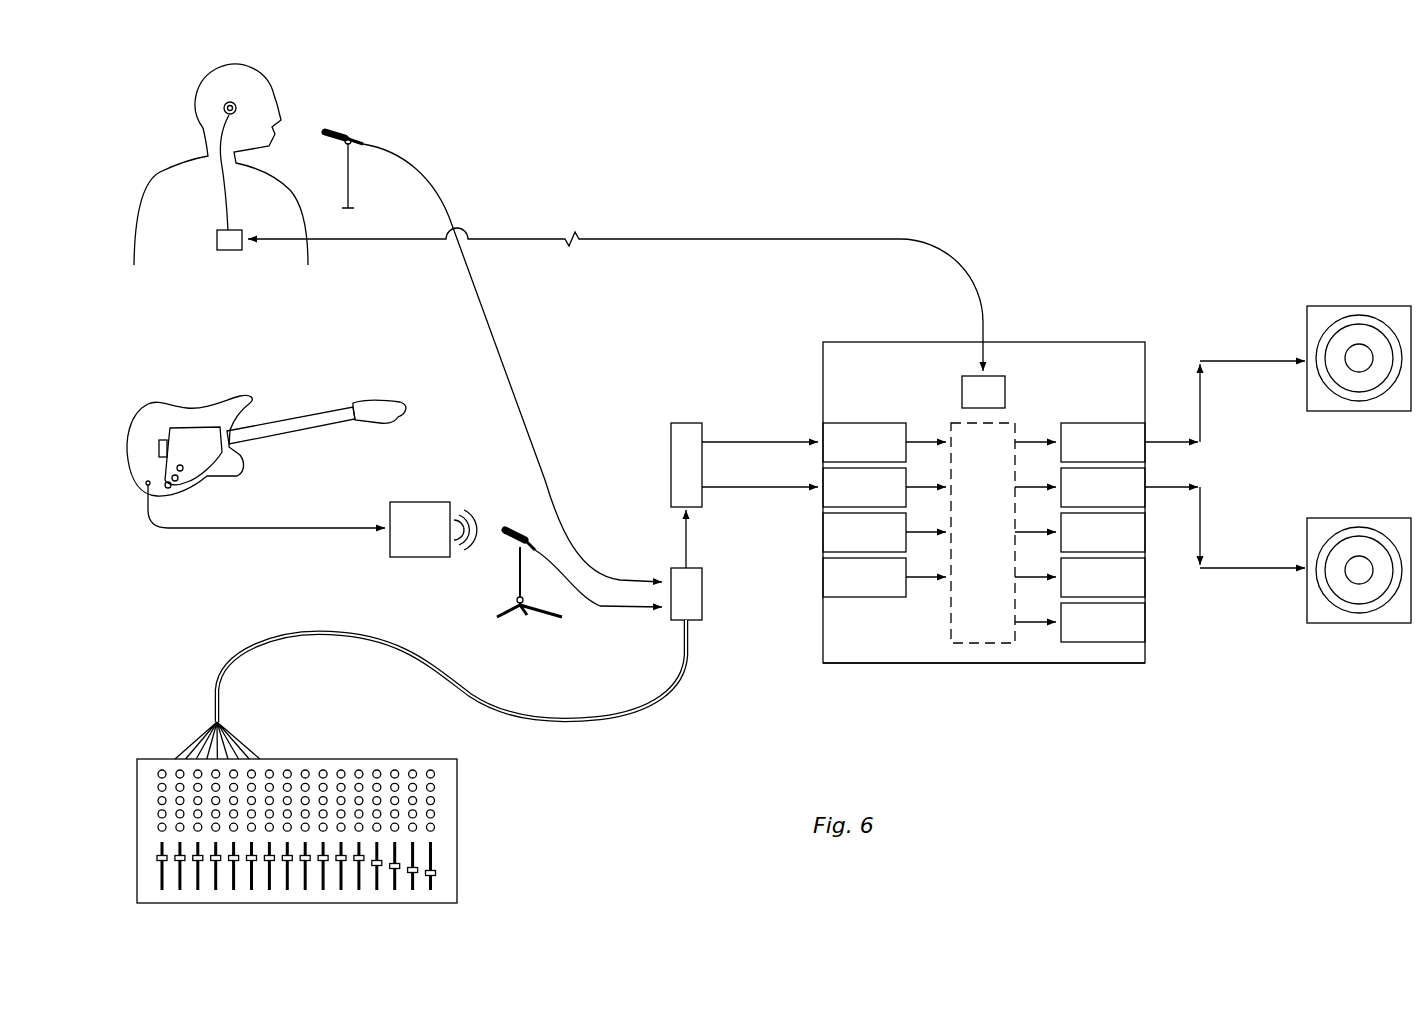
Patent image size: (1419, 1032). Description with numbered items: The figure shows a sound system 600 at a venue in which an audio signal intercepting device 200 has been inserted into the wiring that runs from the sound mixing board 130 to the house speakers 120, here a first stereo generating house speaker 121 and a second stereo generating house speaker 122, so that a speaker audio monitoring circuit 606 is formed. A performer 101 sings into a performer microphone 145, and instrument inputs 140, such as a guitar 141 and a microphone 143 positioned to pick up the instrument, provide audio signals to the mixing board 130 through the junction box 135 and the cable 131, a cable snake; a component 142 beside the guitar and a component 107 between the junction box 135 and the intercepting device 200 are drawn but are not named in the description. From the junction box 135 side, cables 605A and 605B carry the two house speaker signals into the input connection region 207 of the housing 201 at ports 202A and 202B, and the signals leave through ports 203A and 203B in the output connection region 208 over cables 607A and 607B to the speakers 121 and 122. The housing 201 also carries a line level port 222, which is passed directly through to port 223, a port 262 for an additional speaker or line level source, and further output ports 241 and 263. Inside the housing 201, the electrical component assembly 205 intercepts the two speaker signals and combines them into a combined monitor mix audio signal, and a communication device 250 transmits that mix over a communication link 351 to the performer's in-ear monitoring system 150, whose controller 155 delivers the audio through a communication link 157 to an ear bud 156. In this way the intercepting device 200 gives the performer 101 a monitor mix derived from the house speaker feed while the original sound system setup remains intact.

The sound system 600 is at (1185, 796).
The performer 101 is at (206, 73).
The in-ear monitoring system 150 is at (250, 262).
The ear bud 156 is at (224, 108).
The communication link 157 is at (225, 197).
The controller 155 is at (215, 240).
The performer microphone 145 is at (372, 122).
The communication link 351 is at (688, 238).
The speaker audio monitoring circuit 606 is at (1002, 226).
The audio signal intercepting device 200 is at (1055, 313).
The housing 201 is at (932, 340).
The communication device 250 is at (960, 392).
The electrical component assembly 205 is at (1015, 421).
The port 202A is at (864, 442).
The port 202B is at (864, 487).
The port 222 is at (864, 532).
The port 262 is at (864, 577).
The port 203A is at (1103, 442).
The port 203B is at (1103, 487).
The port 223 is at (1103, 532).
The port 263 is at (1103, 577).
The output port 241 is at (1103, 622).
The input connection region 207 is at (874, 667).
The output connection region 208 is at (1093, 667).
The instrument inputs 140 is at (203, 386).
The guitar 141 is at (237, 395).
The guitar amplifier 142 is at (435, 501).
The microphone 143 is at (487, 575).
The signal splitter 107 is at (670, 463).
The cable 605A is at (745, 441).
The cable 605B is at (745, 490).
The junction box 135 is at (704, 594).
The cables 131 is at (283, 645).
The sound mixing board 130 is at (458, 803).
The cable 607A is at (1203, 410).
The cable 607B is at (1203, 516).
The house speakers 120 is at (1281, 599).
The first stereo generating house speaker 121 is at (1356, 284).
The second stereo generating house speaker 122 is at (1357, 644).